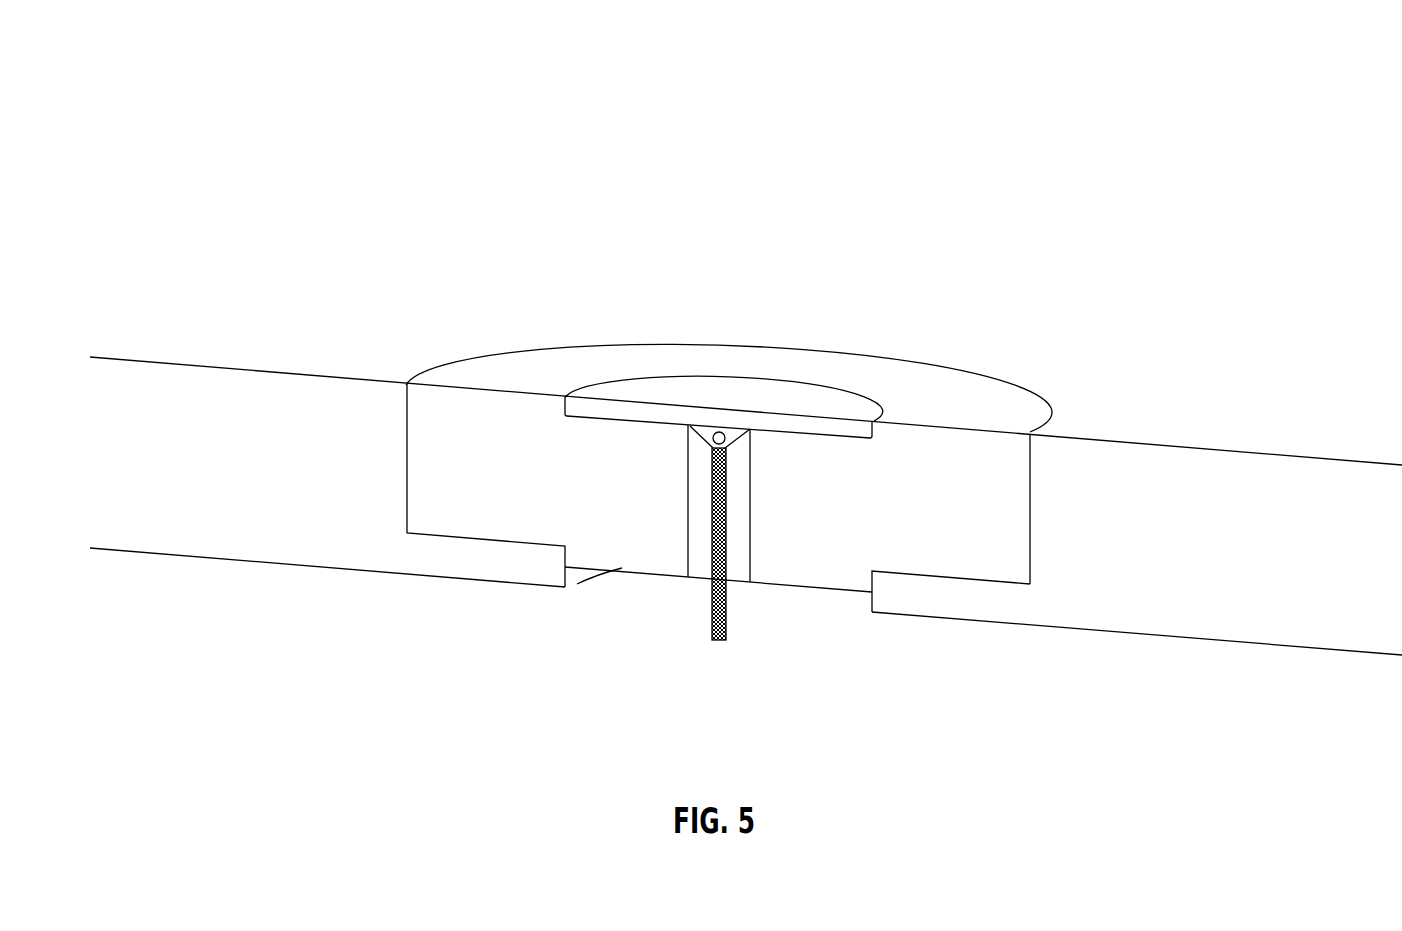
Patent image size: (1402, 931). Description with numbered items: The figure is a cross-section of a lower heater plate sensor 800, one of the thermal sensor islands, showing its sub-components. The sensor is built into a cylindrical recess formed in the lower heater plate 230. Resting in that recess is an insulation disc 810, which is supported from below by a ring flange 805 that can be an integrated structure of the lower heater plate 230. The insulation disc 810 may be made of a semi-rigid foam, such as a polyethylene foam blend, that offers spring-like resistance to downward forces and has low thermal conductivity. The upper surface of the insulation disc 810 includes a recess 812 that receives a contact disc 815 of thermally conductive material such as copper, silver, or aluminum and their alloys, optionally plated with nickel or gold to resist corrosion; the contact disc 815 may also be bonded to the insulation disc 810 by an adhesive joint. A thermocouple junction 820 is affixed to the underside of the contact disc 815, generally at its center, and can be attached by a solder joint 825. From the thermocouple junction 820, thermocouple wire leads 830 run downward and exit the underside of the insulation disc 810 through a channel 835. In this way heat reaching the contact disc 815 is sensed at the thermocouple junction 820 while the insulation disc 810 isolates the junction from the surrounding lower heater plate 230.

The lower heater plate sensor 800 is at (746, 397).
The lower heater plate 230 is at (321, 472).
The ring flange 805 is at (491, 566).
The insulation disc 810 is at (875, 519).
The recess 812 is at (818, 441).
The contact disc 815 is at (677, 389).
The thermocouple junction 820 is at (728, 431).
The solder joint 825 is at (739, 432).
The thermocouple wire leads 830 is at (711, 593).
The channel 835 is at (738, 587).